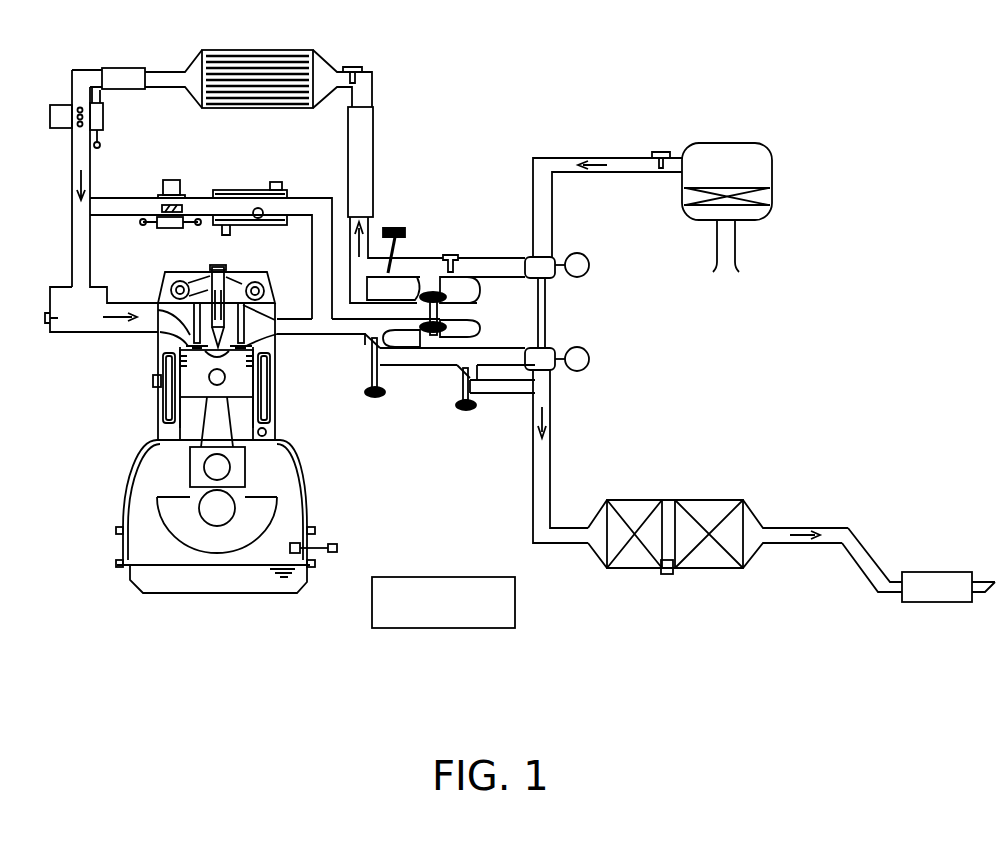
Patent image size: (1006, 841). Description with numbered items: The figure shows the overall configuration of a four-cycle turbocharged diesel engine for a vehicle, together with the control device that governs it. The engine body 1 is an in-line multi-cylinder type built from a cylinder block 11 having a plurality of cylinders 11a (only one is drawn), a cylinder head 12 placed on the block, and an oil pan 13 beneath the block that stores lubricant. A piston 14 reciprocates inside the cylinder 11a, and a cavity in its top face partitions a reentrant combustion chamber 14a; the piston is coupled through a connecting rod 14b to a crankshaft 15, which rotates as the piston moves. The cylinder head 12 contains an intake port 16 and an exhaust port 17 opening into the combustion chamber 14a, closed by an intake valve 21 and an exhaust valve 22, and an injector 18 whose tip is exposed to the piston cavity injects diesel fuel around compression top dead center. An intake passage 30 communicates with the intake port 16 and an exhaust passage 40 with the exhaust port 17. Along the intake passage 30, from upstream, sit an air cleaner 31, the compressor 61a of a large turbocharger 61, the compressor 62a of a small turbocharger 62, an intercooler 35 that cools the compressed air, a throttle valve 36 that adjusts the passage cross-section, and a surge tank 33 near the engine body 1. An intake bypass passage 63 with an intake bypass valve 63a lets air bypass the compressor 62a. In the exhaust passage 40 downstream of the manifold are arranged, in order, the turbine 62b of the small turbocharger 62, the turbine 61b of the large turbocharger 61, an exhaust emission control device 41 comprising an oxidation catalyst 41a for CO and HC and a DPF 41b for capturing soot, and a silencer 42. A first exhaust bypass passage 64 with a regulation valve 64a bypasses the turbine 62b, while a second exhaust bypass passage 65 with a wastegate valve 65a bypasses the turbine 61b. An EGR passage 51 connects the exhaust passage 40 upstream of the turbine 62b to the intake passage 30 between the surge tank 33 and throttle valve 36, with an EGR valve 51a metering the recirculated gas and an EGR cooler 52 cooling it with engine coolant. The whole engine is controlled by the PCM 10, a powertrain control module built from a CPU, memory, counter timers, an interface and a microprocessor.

The engine body 1 is at (75, 578).
The powertrain control module 10 is at (406, 639).
The cylinder block 11 is at (240, 371).
The cylinder 11a is at (267, 428).
The cylinder head 12 is at (280, 300).
The oil pan 13 is at (228, 595).
The piston 14 is at (175, 398).
The combustion chamber 14a is at (262, 370).
The connecting rod 14b is at (180, 410).
The crankshaft 15 is at (210, 527).
The intake port 16 is at (173, 333).
The exhaust port 17 is at (278, 322).
The injector 18 is at (218, 267).
The intake valve 21 is at (180, 353).
The exhaust valve 22 is at (255, 338).
The intake passage 30 is at (72, 225).
The air cleaner 31 is at (742, 145).
The surge tank 33 is at (70, 334).
The intercooler 35 is at (255, 50).
The throttle valve 36 is at (82, 103).
The exhaust passage 40 is at (535, 488).
The exhaust emission control device 41 is at (718, 497).
The oxidation catalyst 41a is at (643, 510).
The DPF 41b is at (709, 510).
The silencer 42 is at (943, 570).
The EGR passage 51 is at (263, 220).
The EGR valve 51a is at (183, 212).
The EGR cooler 52 is at (247, 190).
The large turbocharger 61 is at (609, 312).
The compressor 61a is at (557, 276).
The turbine 61b is at (575, 348).
The small turbocharger 62 is at (463, 223).
The compressor 62a is at (435, 292).
The turbine 62b is at (442, 330).
The intake bypass passage 63 is at (425, 266).
The intake bypass valve 63a is at (405, 253).
The first exhaust bypass passage 64 is at (401, 360).
The regulation valve 64a is at (365, 345).
The second exhaust bypass passage 65 is at (479, 398).
The wastegate valve 65a is at (458, 372).